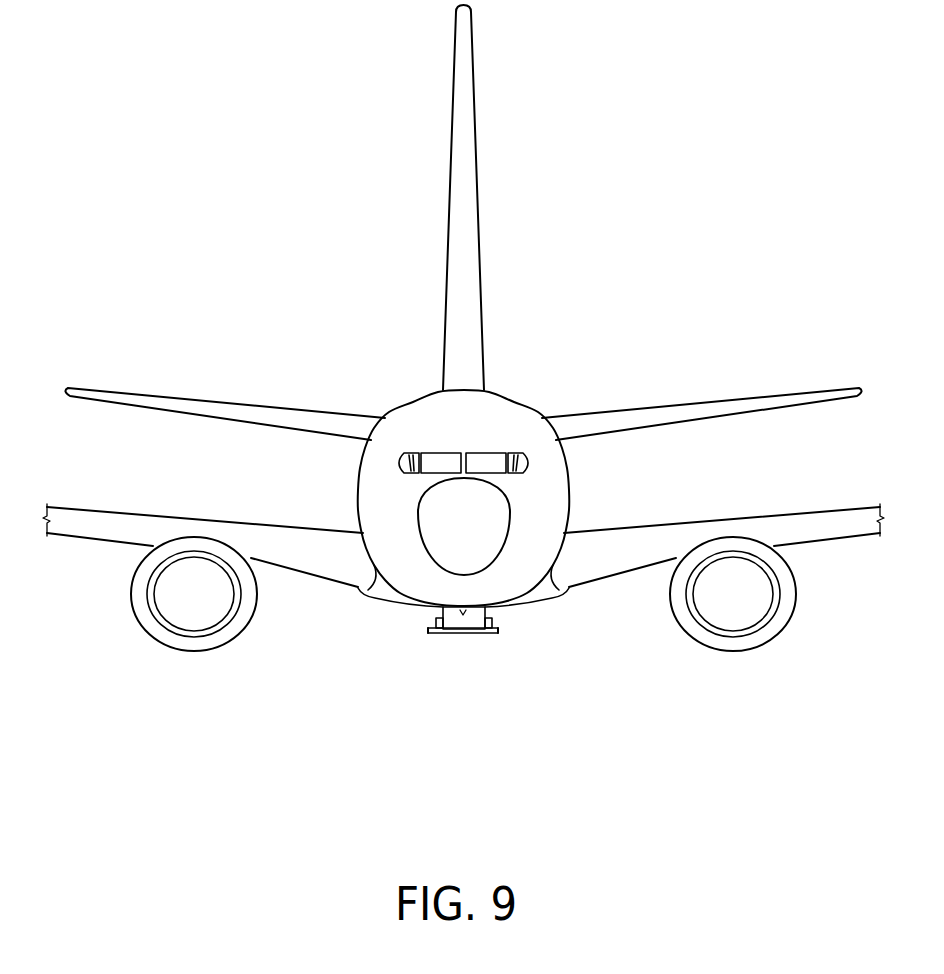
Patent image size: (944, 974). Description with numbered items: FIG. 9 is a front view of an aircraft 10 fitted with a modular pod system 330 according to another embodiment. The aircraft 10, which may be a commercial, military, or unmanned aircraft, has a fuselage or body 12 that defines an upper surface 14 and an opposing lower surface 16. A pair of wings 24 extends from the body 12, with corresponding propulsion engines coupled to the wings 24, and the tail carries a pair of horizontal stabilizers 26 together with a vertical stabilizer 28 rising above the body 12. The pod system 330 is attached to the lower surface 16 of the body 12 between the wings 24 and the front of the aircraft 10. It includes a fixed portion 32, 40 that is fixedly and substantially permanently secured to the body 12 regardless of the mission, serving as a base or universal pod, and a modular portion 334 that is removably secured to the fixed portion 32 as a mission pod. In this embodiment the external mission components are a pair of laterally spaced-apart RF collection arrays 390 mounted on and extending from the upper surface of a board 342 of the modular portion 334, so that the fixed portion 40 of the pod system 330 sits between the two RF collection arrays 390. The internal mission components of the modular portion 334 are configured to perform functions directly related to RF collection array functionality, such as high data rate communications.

The aircraft 10 is at (463, 373).
The body 12 is at (569, 476).
The upper surface 14 is at (415, 401).
The lower surface 16 is at (362, 597).
The wings 24 is at (123, 512).
The horizontal stabilizers 26 is at (202, 400).
The vertical stabilizer 28 is at (468, 162).
The fixed portion 32 is at (457, 670).
The fixed portion 40 is at (455, 622).
The pod system 330 is at (477, 650).
The modular portion 334 is at (426, 642).
The board 342 is at (490, 633).
The RF collection arrays 390 is at (428, 632).